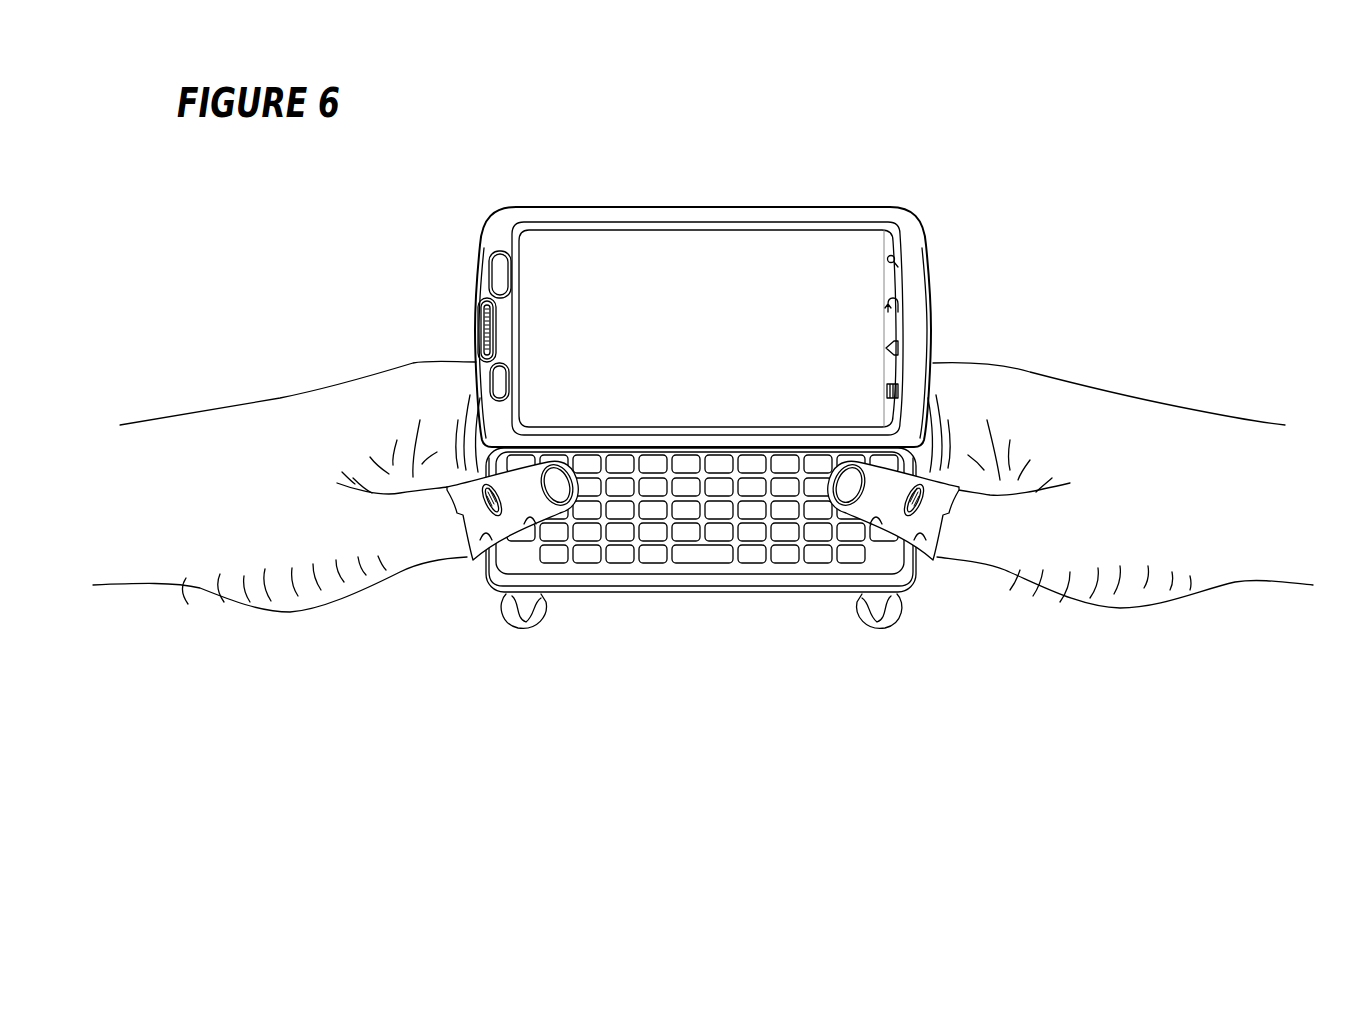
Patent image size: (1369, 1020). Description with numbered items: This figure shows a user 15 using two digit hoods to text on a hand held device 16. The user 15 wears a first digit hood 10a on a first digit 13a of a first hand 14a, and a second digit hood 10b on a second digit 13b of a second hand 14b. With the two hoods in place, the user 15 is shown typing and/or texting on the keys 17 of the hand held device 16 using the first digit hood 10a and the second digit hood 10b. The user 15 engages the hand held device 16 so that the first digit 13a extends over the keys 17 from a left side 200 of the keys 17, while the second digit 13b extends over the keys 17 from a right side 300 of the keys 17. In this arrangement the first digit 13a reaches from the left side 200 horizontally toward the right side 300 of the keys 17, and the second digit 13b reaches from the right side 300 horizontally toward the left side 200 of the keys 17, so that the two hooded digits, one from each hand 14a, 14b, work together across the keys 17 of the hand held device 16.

The right side 300 is at (704, 418).
The left side 200 is at (471, 330).
The hand held device 16 is at (915, 250).
The keys 17 is at (703, 553).
The first hand 14a is at (280, 412).
The second hand 14b is at (1127, 412).
The user 15 is at (130, 565).
The first digit 13a is at (427, 560).
The second digit 13b is at (980, 553).
The first digit hood 10a is at (473, 570).
The second digit hood 10b is at (927, 563).